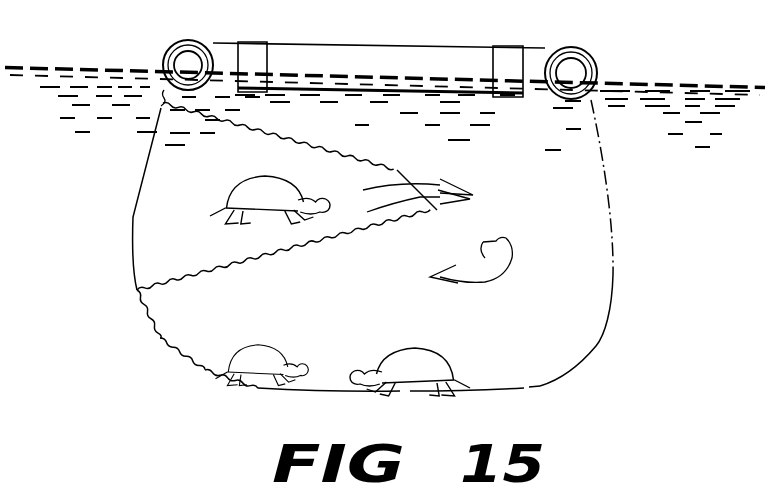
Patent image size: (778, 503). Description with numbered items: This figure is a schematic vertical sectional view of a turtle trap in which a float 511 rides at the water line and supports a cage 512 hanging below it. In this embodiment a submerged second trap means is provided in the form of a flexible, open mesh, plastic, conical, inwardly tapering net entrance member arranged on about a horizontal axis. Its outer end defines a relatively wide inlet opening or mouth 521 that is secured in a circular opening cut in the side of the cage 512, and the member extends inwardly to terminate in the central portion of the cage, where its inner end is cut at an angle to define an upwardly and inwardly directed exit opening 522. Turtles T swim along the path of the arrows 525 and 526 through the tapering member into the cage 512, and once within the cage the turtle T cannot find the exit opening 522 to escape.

The float 511 is at (403, 46).
The cage 512 is at (608, 236).
The inlet opening or mouth 521 is at (158, 204).
The exit opening 522 is at (398, 174).
The arrow 525 is at (393, 205).
The arrow 526 is at (483, 266).
The turtle T is at (242, 183).